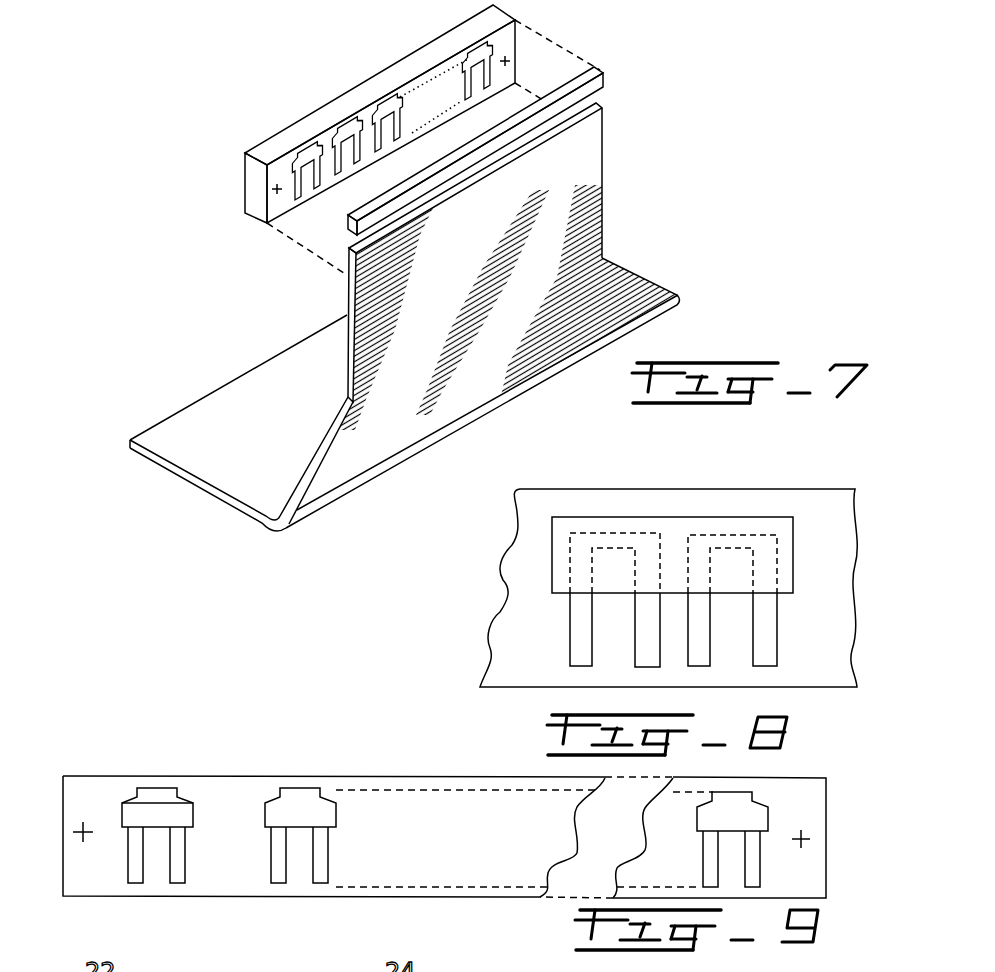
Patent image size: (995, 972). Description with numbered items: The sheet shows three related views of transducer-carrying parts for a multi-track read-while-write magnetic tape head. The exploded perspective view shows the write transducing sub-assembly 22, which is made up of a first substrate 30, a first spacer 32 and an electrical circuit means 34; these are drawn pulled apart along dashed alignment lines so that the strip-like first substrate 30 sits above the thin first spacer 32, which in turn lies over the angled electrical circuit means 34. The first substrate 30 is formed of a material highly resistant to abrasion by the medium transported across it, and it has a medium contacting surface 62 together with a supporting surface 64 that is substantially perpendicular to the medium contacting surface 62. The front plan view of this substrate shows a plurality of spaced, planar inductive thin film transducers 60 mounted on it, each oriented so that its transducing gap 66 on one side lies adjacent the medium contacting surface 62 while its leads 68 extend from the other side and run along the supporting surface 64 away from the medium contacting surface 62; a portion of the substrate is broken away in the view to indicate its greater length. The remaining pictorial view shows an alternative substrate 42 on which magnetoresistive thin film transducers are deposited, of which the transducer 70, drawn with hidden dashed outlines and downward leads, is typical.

In FIG. 7, the write transducing sub-assembly 22 is at (648, 22).
In FIG. 7, the first substrate 30 is at (507, 43).
In FIG. 9, the first substrate 30 is at (812, 826).
In FIG. 7, the first spacer 32 is at (597, 92).
In FIG. 7, the electrical circuit means 34 is at (597, 240).
In FIG. 8, the substrate 42 is at (824, 506).
In FIG. 7, the inductive thin film transducer 60 is at (296, 179).
In FIG. 9, the inductive thin film transducer 60 is at (182, 812).
In FIG. 7, the medium contacting surface 62 is at (450, 42).
In FIG. 9, the medium contacting surface 62 is at (342, 775).
In FIG. 9, the supporting surface 64 is at (405, 812).
In FIG. 9, the transducing gap 66 is at (157, 789).
In FIG. 9, the leads 68 is at (136, 882).
In FIG. 8, the magnetoresistive thin film transducer 70 is at (747, 535).